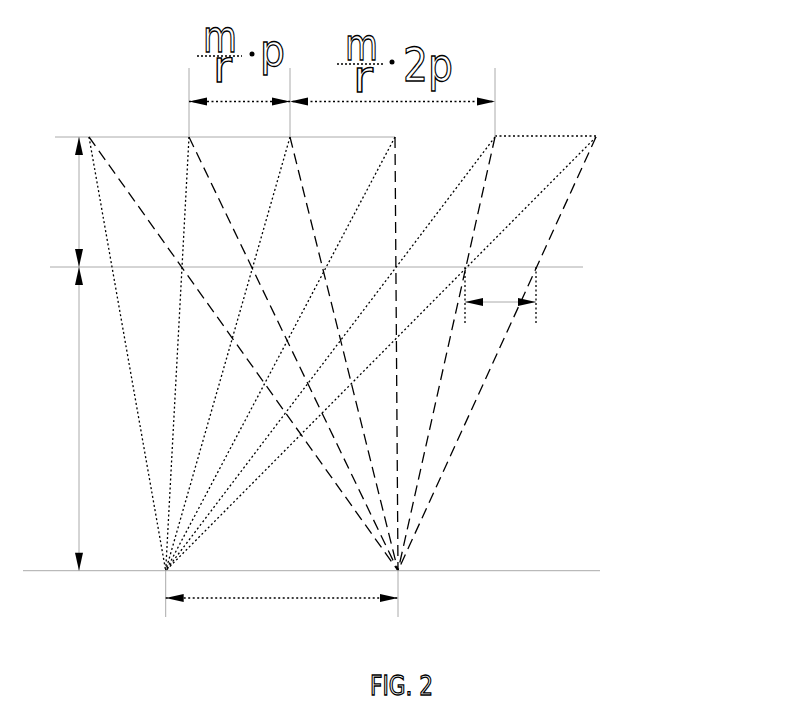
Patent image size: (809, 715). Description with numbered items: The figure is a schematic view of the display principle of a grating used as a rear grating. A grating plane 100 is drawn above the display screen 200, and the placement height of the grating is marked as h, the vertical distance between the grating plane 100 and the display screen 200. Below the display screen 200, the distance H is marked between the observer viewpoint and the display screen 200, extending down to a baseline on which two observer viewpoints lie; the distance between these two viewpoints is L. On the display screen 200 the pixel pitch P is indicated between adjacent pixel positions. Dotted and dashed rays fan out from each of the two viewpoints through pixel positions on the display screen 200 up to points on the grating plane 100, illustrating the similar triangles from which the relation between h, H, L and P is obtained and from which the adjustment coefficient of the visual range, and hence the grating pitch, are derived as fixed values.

The display panel plane 100 is at (580, 132).
The display screen 200 is at (582, 268).
The placement height of the grating h is at (56, 202).
The distance between the observer viewpoint and the display screen H is at (57, 419).
The pixel pitch P is at (500, 314).
The distance between the two viewpoints L is at (282, 612).